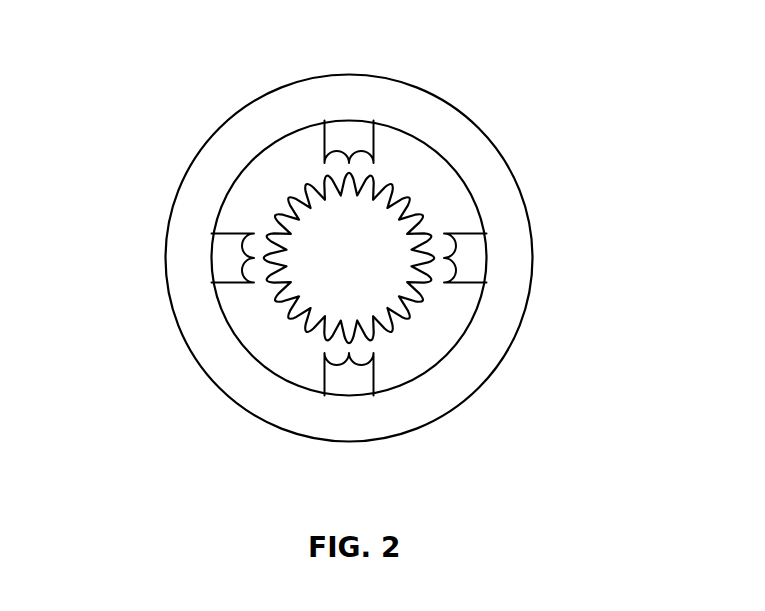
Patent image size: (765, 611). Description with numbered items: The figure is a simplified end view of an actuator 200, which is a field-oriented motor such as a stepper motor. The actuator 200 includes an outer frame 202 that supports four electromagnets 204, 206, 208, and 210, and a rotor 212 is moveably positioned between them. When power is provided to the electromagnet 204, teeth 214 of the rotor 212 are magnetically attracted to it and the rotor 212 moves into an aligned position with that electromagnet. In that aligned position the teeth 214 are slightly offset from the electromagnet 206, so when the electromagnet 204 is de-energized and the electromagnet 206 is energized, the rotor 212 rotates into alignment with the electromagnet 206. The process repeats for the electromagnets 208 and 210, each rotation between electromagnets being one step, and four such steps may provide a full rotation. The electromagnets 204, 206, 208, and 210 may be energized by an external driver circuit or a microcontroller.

The actuator 200 is at (172, 71).
The outer frame 202 is at (437, 93).
The electromagnet 204 is at (348, 140).
The electromagnet 206 is at (477, 258).
The electromagnet 208 is at (349, 375).
The electromagnet 210 is at (223, 260).
The rotor 212 is at (368, 247).
The teeth 214 is at (303, 190).